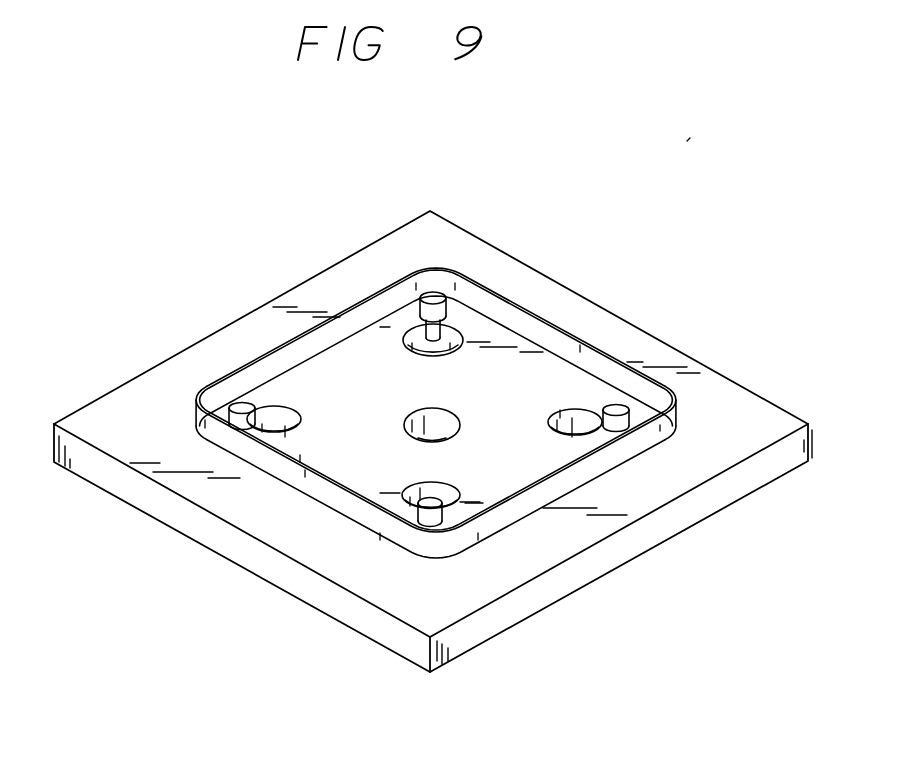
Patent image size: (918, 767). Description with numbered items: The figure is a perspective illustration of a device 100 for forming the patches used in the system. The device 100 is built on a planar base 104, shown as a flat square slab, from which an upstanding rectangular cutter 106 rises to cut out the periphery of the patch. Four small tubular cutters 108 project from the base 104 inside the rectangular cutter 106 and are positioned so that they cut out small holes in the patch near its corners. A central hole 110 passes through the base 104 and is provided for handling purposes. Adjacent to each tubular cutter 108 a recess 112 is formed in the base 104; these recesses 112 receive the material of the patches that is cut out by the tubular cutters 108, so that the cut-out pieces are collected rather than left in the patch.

The device 100 is at (780, 30).
The planar base 104 is at (655, 532).
The upstanding rectangular cutter 106 is at (482, 517).
The tubular cutter 108 is at (437, 298).
The central hole 110 is at (450, 420).
The recess 112 is at (277, 435).